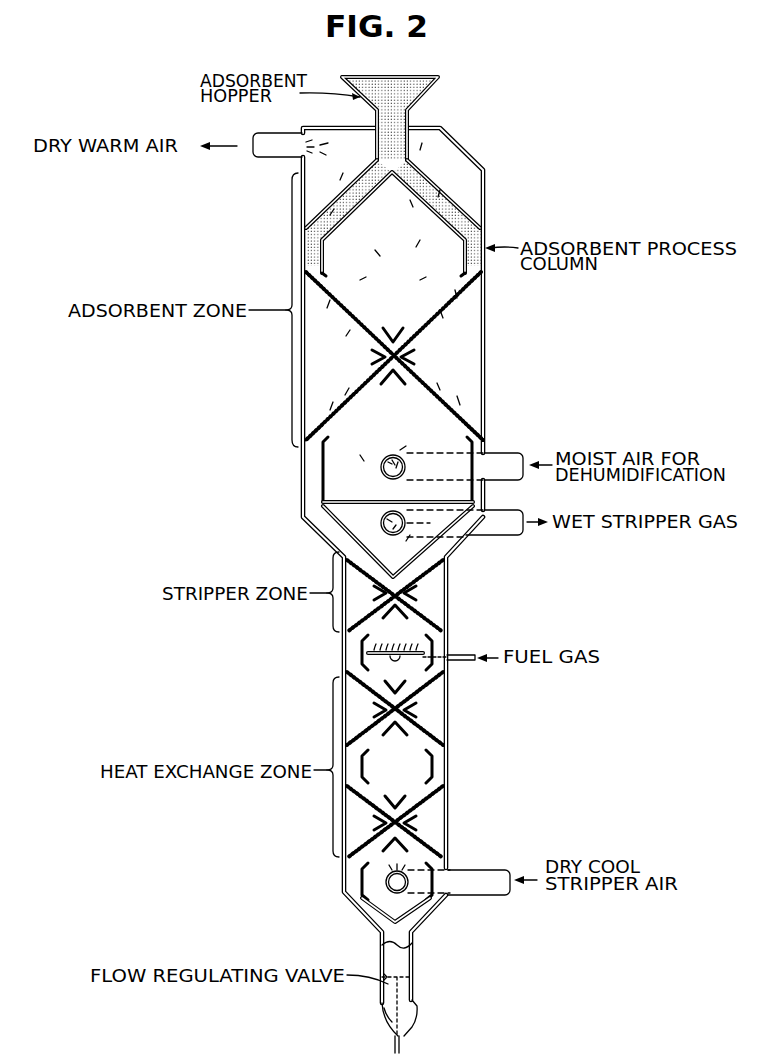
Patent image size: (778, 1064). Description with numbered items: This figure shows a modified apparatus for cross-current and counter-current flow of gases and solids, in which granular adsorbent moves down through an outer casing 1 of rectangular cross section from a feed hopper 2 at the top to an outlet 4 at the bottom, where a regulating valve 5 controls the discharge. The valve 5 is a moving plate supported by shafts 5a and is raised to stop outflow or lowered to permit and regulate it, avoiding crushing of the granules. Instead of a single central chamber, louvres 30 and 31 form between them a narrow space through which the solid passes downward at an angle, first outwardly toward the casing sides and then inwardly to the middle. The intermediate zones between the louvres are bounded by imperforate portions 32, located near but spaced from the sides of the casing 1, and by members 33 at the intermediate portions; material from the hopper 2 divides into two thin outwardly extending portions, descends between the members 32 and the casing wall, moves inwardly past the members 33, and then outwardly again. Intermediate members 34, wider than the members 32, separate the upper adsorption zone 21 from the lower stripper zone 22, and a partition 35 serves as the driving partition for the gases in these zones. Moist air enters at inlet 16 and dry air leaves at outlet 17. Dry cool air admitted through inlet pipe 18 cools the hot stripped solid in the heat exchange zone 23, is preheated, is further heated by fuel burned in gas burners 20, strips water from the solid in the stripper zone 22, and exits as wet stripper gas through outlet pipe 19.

The outer casing 1 is at (485, 205).
The feed hopper 2 is at (430, 86).
The outlet 4 is at (417, 1004).
The regulating valve 5 is at (407, 977).
The shafts 5a is at (382, 1009).
The inlet for moist air 16 is at (507, 455).
The outlet for dry air 17 is at (272, 155).
The inlet pipe for dry cool air 18 is at (482, 890).
The outlet pipe for wet stripper gas 19 is at (507, 533).
The gas burners 20 is at (440, 652).
The adsorption zone 21 is at (292, 348).
The stripper zone 22 is at (333, 612).
The heat exchange zone 23 is at (333, 809).
The louvres 30 is at (446, 190).
The louvres 31 is at (430, 207).
The imperforate portions 32 is at (322, 257).
The members 33 is at (373, 357).
The intermediate members 34 is at (323, 467).
The partition 35 is at (383, 500).